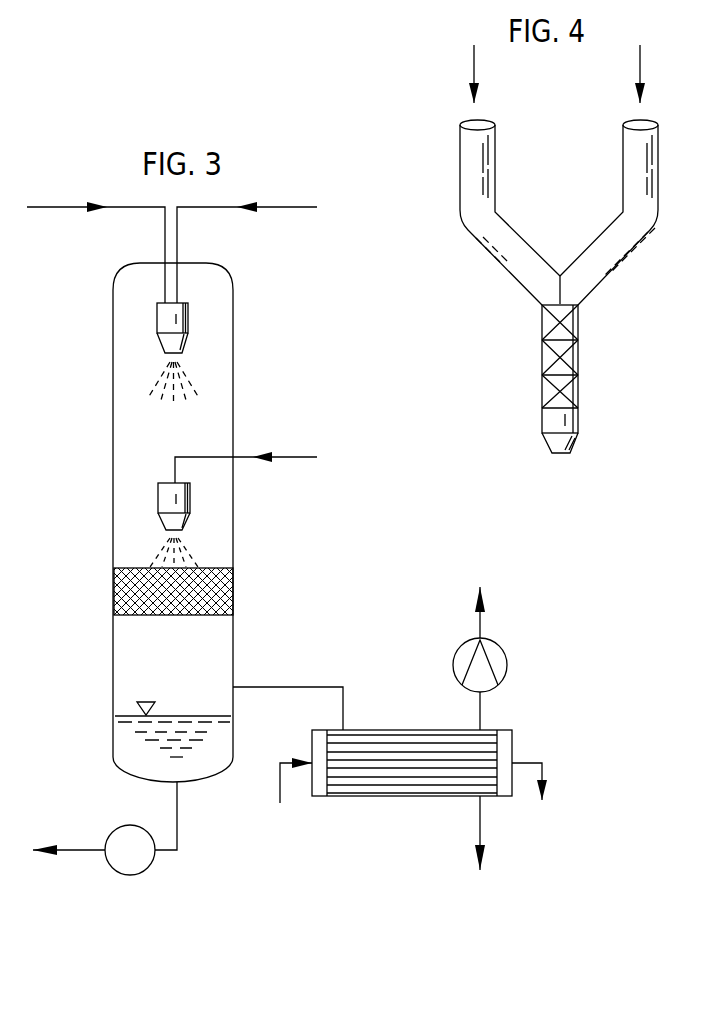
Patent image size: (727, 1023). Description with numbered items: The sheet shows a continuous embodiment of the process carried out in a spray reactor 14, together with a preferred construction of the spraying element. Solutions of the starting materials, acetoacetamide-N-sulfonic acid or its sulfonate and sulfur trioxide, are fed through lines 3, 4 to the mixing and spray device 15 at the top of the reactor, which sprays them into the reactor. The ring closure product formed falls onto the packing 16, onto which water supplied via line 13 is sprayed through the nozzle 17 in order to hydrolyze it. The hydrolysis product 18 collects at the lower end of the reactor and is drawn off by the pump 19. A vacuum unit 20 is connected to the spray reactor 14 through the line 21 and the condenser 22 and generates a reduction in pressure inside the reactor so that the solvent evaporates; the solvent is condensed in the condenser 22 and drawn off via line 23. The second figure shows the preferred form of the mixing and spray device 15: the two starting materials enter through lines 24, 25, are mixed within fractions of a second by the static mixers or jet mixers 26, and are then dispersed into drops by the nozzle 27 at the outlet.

In FIG. 3, the line 3 is at (60, 208).
In FIG. 3, the line 4 is at (287, 208).
In FIG. 3, the line 13 is at (285, 461).
In FIG. 3, the spray reactor 14 is at (102, 445).
In FIG. 3, the mixing and spray device 15 is at (188, 320).
In FIG. 3, the packing 16 is at (118, 594).
In FIG. 3, the nozzle 17 is at (162, 508).
In FIG. 3, the hydrolysis product 18 is at (133, 744).
In FIG. 3, the pump 19 is at (152, 861).
In FIG. 3, the vacuum unit 20 is at (458, 658).
In FIG. 3, the line 21 is at (285, 686).
In FIG. 3, the condenser 22 is at (350, 797).
In FIG. 3, the line 23 is at (478, 823).
In FIG. 4, the line 24 is at (462, 153).
In FIG. 4, the line 25 is at (623, 164).
In FIG. 4, the static mixers or jet mixers 26 is at (543, 357).
In FIG. 4, the nozzle 27 is at (578, 418).